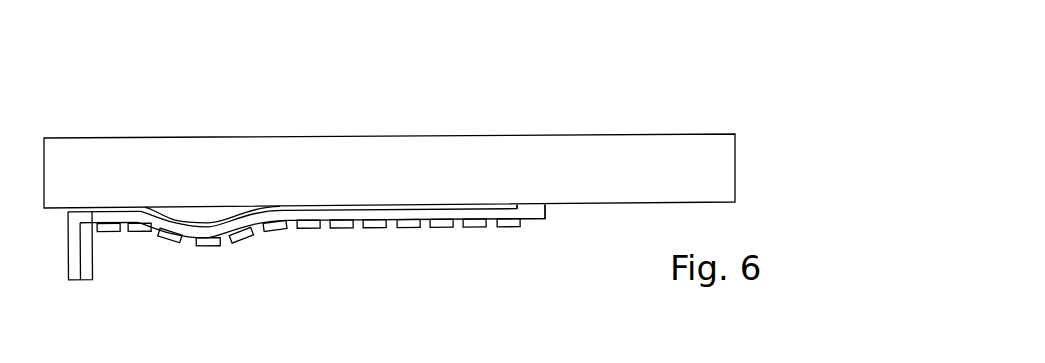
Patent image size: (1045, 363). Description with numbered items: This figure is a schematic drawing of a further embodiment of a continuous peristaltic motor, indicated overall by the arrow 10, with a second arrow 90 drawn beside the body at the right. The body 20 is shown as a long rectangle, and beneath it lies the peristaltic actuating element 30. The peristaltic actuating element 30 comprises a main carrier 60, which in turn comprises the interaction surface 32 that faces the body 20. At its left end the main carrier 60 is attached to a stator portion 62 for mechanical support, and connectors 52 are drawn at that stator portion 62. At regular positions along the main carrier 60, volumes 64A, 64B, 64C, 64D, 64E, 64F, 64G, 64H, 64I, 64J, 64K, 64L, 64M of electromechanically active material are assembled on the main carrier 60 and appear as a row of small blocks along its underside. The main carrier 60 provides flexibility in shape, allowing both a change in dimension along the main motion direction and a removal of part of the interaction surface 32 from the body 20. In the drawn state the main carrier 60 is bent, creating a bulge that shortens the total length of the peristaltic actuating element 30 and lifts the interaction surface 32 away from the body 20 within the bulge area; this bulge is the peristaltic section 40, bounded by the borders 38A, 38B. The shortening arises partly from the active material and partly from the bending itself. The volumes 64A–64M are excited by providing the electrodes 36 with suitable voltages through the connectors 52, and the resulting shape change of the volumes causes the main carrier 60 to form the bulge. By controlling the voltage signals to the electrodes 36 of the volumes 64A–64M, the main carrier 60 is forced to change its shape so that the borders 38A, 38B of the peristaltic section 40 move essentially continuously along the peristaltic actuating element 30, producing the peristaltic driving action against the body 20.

The electronic device assembly 10 is at (575, 78).
The insertion direction 90 is at (800, 118).
The body 20 is at (200, 139).
The peristaltic actuating element 30 is at (571, 223).
The interaction surface 32 is at (452, 208).
The electrodes 36 is at (510, 212).
The border of the peristaltic section 38A is at (140, 218).
The border of the peristaltic section 38B is at (280, 218).
The peristaltic section 40 is at (227, 224).
The connectors 52 is at (82, 283).
The main carrier 60 is at (393, 212).
The stator portion 62 is at (70, 250).
The volume of electromechanically active material 64A is at (110, 234).
The volume of electromechanically active material 64B is at (150, 234).
The volume of electromechanically active material 64C is at (170, 240).
The volume of electromechanically active material 64D is at (215, 249).
The volume of electromechanically active material 64E is at (247, 242).
The volume of electromechanically active material 64F is at (283, 234).
The volume of electromechanically active material 64G is at (312, 232).
The volume of electromechanically active material 64H is at (350, 232).
The volume of electromechanically active material 64I is at (378, 232).
The volume of electromechanically active material 64J is at (417, 232).
The volume of electromechanically active material 64K is at (445, 232).
The volume of electromechanically active material 64L is at (482, 232).
The volume of electromechanically active material 64M is at (513, 232).